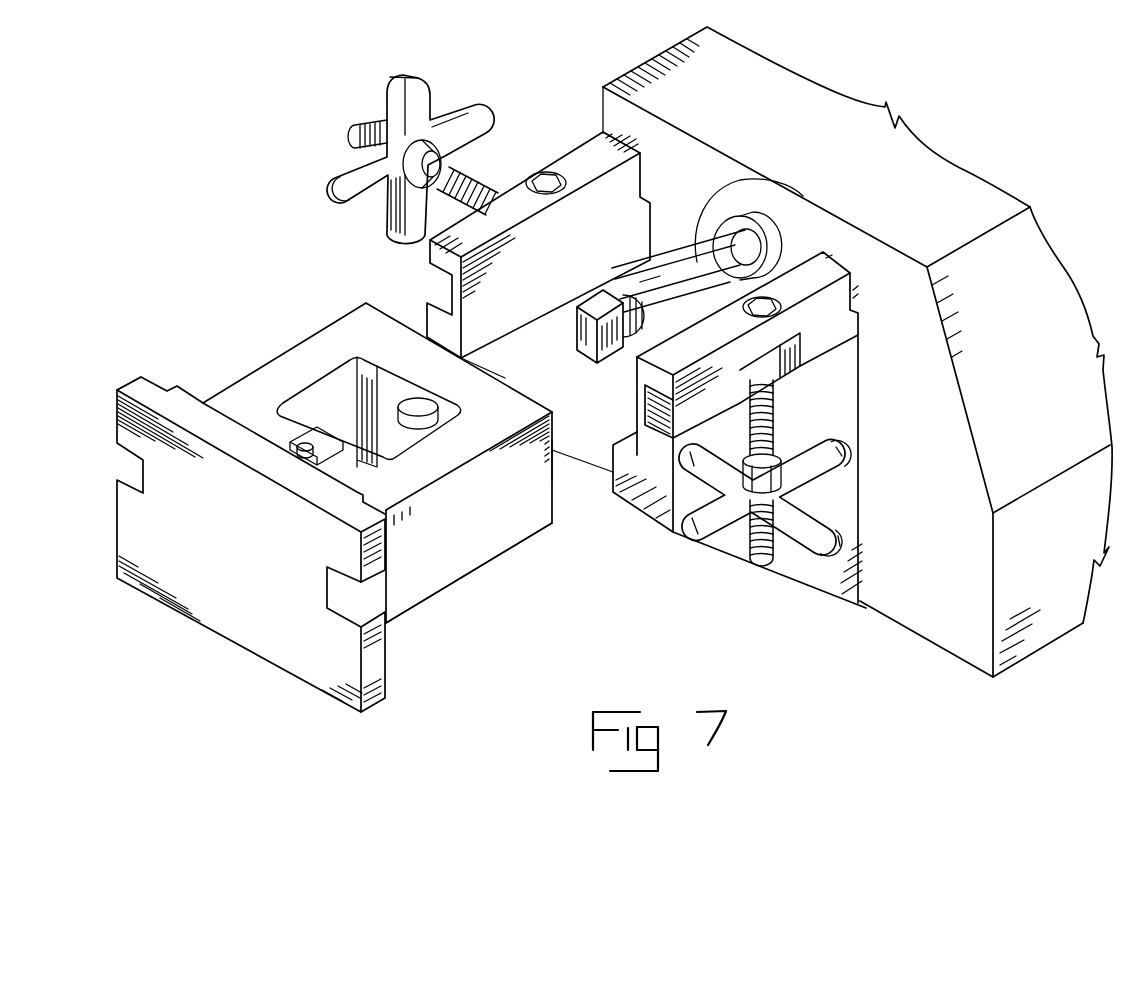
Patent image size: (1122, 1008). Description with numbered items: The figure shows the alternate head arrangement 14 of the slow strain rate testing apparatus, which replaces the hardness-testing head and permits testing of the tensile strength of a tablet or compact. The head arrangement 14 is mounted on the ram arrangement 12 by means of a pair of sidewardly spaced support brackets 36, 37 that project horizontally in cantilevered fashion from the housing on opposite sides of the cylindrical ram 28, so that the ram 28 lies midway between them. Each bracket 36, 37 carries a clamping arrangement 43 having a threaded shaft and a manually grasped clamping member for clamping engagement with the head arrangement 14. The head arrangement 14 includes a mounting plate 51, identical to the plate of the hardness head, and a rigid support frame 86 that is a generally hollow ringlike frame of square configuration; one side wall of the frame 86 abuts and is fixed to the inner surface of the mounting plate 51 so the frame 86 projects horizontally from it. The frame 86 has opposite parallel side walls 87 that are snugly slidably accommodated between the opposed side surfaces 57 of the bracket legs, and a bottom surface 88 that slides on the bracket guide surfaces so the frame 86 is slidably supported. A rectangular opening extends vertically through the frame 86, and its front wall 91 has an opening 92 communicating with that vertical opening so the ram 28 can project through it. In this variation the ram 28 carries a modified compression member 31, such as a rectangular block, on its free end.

The ram arrangement 12 is at (950, 157).
The alternate head arrangement 14 is at (126, 336).
The cylindrical ram 28 is at (705, 256).
The compression member 31 is at (592, 347).
The support bracket 36 is at (811, 582).
The support bracket 37 is at (577, 150).
The clamping arrangement 43 is at (484, 178).
The mounting plate 51 is at (230, 615).
The opposed side surfaces 57 is at (623, 183).
The support frame 86 is at (403, 458).
The side walls 87 is at (523, 520).
The bottom surface 88 is at (513, 547).
The front wall 91 is at (403, 347).
The opening 92 is at (376, 427).